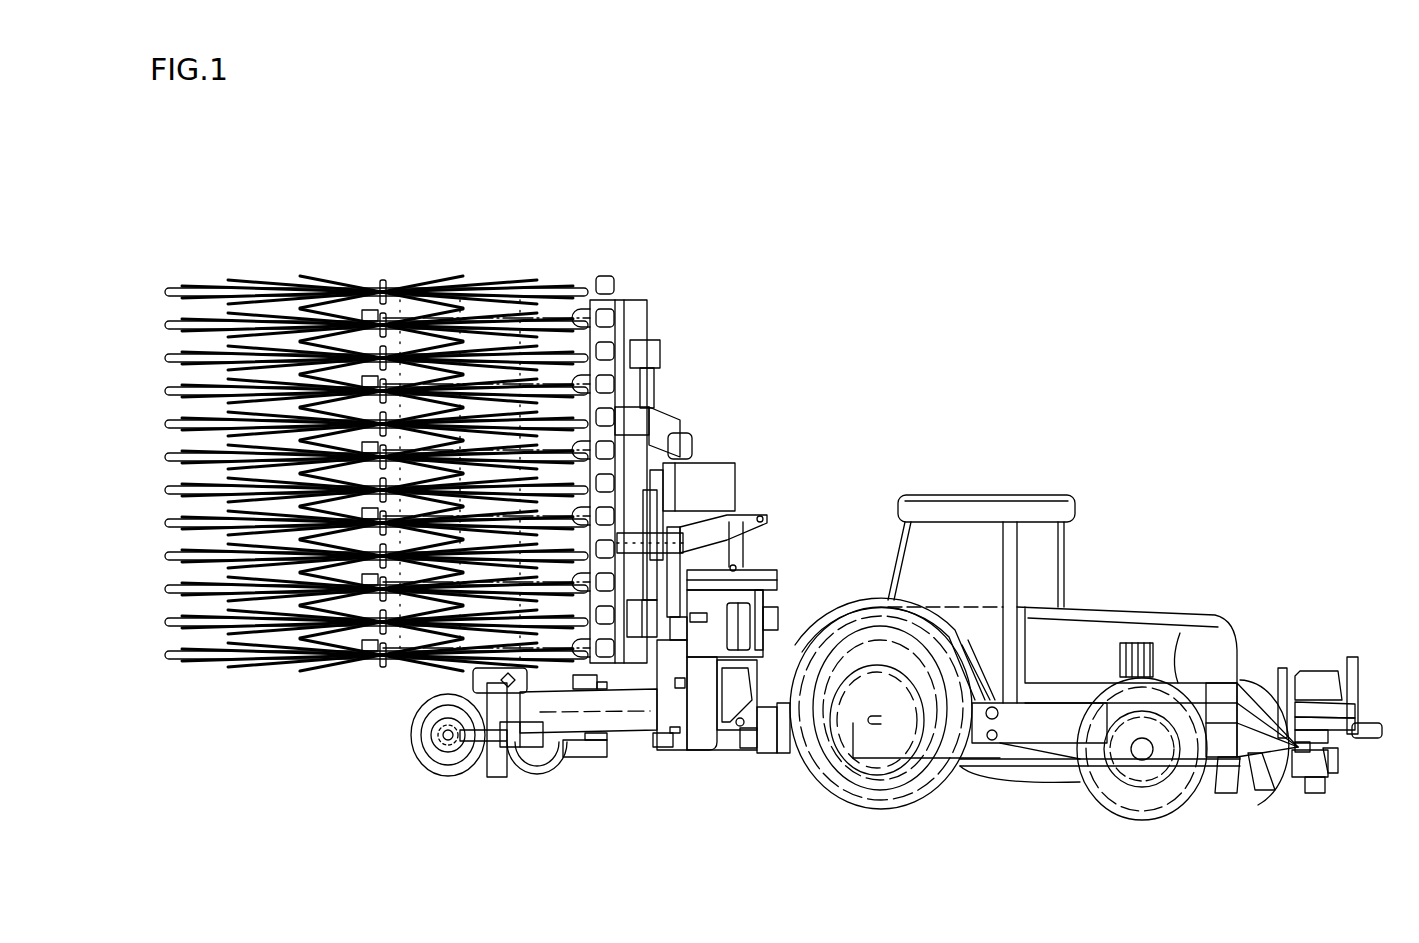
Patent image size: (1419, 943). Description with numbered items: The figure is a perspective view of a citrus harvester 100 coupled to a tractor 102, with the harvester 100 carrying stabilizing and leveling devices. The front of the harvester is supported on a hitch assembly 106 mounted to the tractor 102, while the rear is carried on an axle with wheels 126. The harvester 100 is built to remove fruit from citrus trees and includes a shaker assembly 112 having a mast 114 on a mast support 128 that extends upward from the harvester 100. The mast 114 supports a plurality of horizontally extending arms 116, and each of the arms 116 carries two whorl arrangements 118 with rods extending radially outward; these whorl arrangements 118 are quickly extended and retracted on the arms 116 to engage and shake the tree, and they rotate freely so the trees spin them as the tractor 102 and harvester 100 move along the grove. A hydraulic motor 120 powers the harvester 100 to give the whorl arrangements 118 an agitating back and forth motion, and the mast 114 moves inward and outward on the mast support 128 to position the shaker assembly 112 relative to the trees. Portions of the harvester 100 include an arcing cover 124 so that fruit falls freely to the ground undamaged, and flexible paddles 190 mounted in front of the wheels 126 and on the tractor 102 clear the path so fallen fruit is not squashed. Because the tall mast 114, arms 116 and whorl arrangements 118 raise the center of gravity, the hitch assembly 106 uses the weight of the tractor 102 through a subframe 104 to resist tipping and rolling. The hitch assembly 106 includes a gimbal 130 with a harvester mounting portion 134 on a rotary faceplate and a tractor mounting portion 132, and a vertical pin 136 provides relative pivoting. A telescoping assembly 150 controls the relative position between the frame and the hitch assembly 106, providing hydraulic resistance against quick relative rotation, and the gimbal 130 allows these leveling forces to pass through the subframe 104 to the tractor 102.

The harvester 100 is at (567, 220).
The tractor 102 is at (1137, 548).
The subframe 104 is at (1044, 770).
The hitch assembly 106 is at (778, 790).
The shaker assembly 112 is at (343, 688).
The mast 114 is at (645, 312).
The arms 116 is at (555, 300).
The whorl arrangements 118 is at (327, 282).
The hydraulic motor 120 is at (700, 615).
The arcing cover 124 is at (480, 680).
The wheels 126 is at (427, 757).
The mast support 128 is at (672, 424).
The gimbal 130 is at (758, 748).
The tractor mounting portion 132 is at (787, 758).
The harvester mounting portion 134 is at (737, 747).
The vertical pin 136 is at (748, 730).
The telescoping assembly 150 is at (764, 652).
The flexible paddles 190 is at (500, 768).